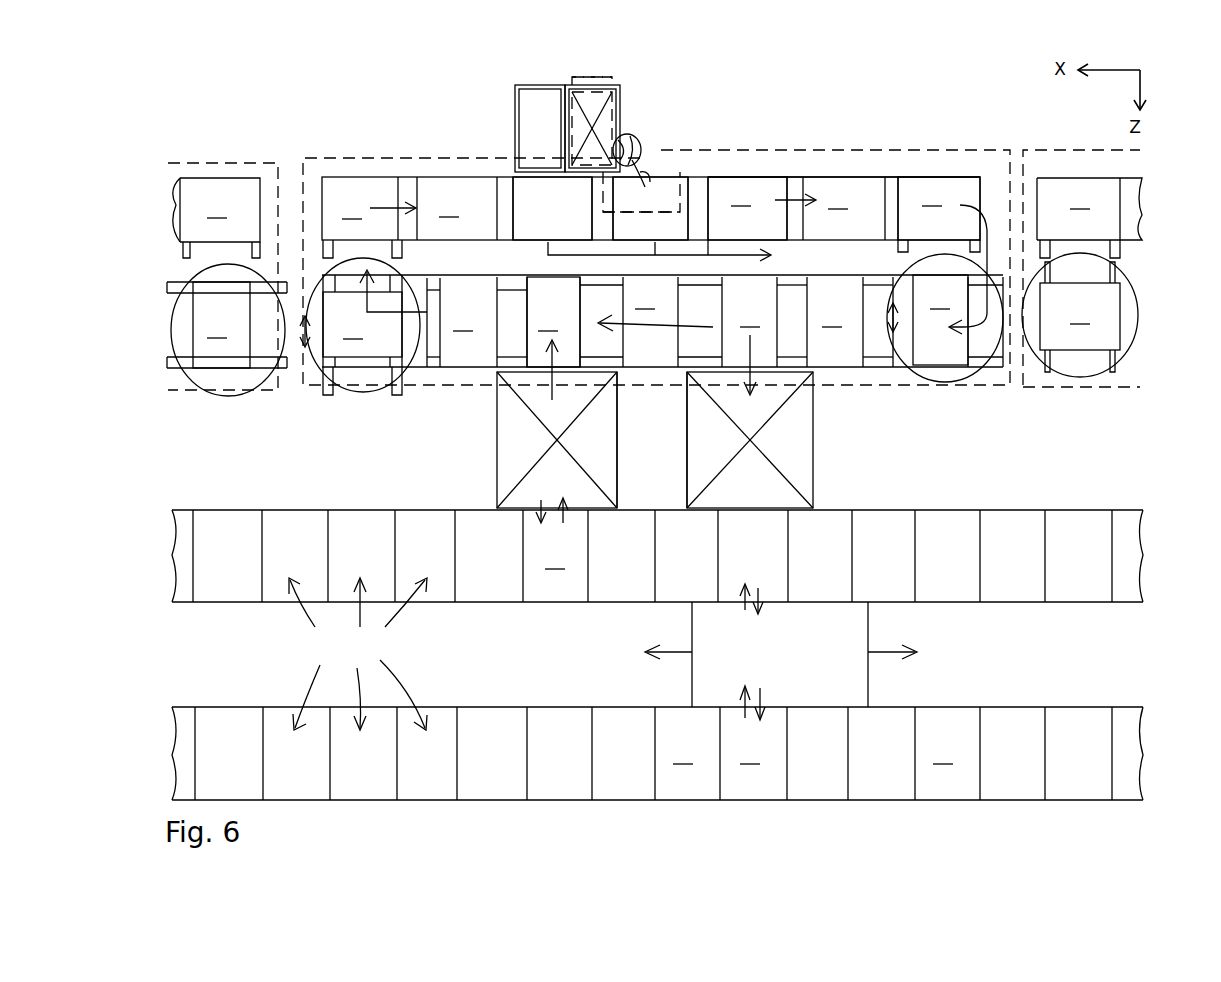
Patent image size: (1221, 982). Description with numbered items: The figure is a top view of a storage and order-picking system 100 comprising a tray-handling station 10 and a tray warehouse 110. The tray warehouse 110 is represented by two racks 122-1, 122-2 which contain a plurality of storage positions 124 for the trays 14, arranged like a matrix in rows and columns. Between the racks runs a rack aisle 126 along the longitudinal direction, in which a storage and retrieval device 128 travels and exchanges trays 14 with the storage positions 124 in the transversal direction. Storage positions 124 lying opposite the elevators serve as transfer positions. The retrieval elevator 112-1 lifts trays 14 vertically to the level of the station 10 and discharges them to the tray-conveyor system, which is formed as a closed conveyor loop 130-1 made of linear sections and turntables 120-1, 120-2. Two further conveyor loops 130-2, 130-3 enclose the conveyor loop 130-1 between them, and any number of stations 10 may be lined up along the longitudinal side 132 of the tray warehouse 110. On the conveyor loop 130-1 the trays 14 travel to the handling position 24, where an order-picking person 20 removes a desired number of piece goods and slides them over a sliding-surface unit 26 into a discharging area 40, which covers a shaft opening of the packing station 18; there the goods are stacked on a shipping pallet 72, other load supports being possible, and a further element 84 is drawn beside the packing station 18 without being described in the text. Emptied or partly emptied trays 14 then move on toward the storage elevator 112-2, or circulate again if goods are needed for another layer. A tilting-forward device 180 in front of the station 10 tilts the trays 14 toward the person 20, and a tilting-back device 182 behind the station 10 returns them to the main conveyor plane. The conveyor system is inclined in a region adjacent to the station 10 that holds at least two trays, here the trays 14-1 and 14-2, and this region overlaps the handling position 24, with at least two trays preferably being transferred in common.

The tray-handling station 10 is at (703, 60).
The tray 14 is at (647, 470).
The tray 14-1 is at (528, 219).
The tray 14-2 is at (635, 231).
The packing station 18 is at (566, 50).
The order-picking person 20 is at (641, 151).
The handling position 24 is at (683, 180).
The sliding-surface unit 26 is at (616, 106).
The discharging area 40 is at (600, 78).
The shipping pallet 72 is at (580, 109).
The buffer station 84 is at (533, 132).
The system 100 is at (1122, 408).
The tray warehouse 110 is at (691, 613).
The elevator 112-1 is at (497, 470).
The elevator 112-2 is at (815, 462).
The turntable 120-1 is at (355, 392).
The turntable 120-2 is at (950, 388).
The rack 122-1 is at (657, 528).
The rack 122-2 is at (235, 707).
The storage position 124 is at (358, 654).
The rack aisle 126 is at (1030, 667).
The storage and retrieval device 128 is at (766, 667).
The conveyor loop 130-1 is at (855, 150).
The conveyor loop 130-2 is at (1037, 150).
The conveyor loop 130-3 is at (212, 163).
The longitudinal side 132 is at (962, 508).
The tilting-forward device 180 is at (428, 175).
The tilting-back device 182 is at (775, 168).